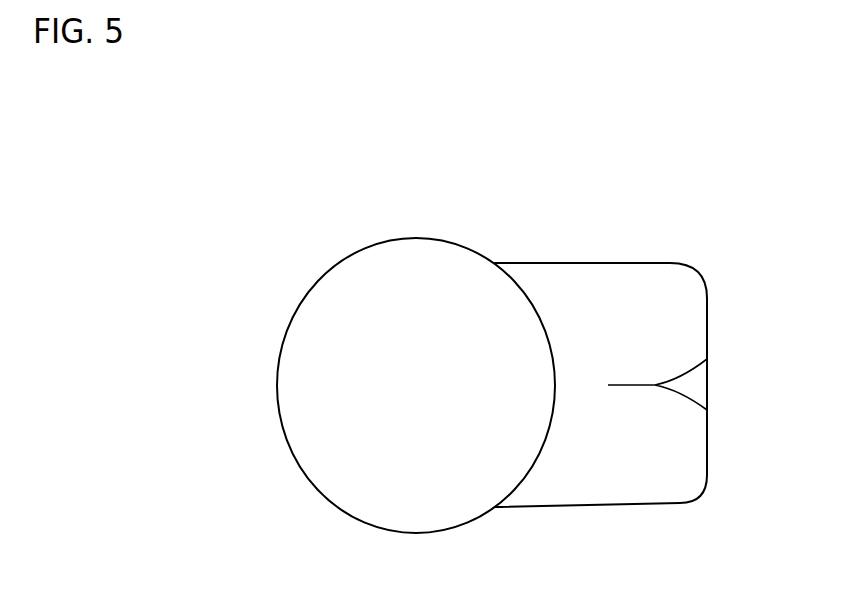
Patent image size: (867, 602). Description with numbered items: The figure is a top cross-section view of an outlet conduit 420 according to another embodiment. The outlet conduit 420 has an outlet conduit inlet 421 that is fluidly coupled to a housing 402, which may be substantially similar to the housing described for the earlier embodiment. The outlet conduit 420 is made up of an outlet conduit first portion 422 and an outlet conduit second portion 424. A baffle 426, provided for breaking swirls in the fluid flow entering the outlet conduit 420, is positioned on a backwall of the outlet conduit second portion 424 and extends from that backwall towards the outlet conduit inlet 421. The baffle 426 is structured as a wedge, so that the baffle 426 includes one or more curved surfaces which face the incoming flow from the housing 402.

The housing 402 is at (341, 255).
The outlet conduit 420 is at (595, 258).
The outlet conduit inlet 421 is at (488, 262).
The outlet conduit first portion 422 is at (503, 508).
The outlet conduit second portion 424 is at (708, 457).
The baffle 426 is at (697, 381).